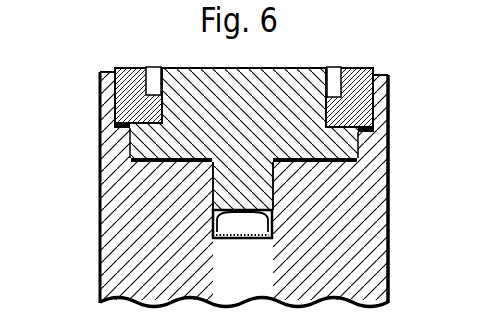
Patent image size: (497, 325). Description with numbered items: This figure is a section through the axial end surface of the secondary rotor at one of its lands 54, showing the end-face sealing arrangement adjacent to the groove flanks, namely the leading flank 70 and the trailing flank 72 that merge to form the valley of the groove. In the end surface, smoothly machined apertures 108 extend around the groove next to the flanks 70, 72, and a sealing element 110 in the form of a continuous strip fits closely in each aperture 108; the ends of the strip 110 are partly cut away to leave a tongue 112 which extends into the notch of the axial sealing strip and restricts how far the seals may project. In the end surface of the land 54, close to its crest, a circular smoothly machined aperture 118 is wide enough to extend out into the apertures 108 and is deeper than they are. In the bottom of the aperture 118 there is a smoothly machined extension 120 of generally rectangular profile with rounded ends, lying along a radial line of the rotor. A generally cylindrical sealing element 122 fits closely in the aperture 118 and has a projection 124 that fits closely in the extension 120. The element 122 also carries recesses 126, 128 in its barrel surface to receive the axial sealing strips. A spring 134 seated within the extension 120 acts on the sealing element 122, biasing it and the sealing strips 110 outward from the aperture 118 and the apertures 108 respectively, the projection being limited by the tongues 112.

The land 54 is at (386, 303).
The leading flank 70 is at (99, 266).
The trailing flank 72 is at (318, 273).
The apertures 108 is at (120, 126).
The sealing element 110 is at (125, 68).
The tongue 112 is at (152, 110).
The aperture 118 is at (135, 162).
The extension 120 is at (212, 228).
The sealing element 122 is at (304, 82).
The projection 124 is at (262, 191).
The recess 126 is at (153, 82).
The recess 128 is at (334, 80).
The spring 134 is at (264, 223).